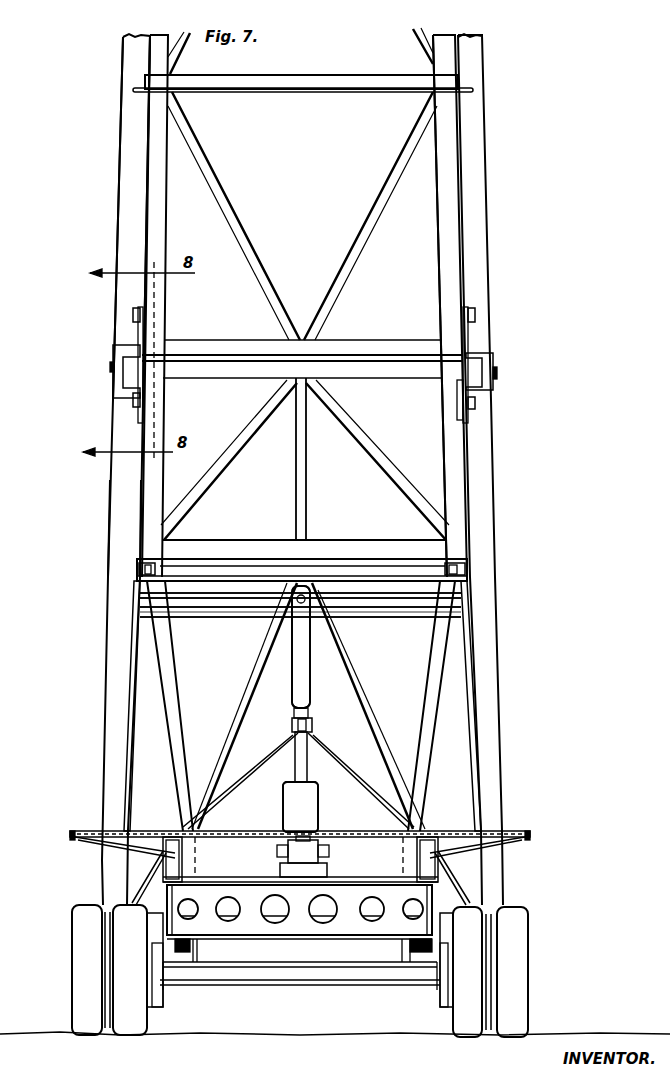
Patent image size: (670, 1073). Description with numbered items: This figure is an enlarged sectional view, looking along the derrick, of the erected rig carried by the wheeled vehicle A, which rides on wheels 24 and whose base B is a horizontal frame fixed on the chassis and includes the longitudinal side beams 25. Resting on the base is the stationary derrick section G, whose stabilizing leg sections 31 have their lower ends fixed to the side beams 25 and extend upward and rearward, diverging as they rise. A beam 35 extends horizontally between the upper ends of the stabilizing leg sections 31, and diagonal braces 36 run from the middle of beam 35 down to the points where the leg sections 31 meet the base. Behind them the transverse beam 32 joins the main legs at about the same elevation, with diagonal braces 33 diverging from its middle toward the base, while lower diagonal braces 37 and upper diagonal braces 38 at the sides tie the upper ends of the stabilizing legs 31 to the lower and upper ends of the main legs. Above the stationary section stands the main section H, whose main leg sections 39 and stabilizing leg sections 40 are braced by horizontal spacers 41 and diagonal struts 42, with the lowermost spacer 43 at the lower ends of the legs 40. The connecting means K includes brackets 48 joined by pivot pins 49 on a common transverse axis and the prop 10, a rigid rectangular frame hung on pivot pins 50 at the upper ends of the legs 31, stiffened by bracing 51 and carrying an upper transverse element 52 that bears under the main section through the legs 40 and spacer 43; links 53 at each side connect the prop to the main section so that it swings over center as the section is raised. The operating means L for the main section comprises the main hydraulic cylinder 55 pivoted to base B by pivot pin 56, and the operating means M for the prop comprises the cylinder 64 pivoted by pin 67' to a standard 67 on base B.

The prop 10 is at (452, 478).
The wheel 24 is at (515, 1002).
The longitudinal side beams 25 is at (198, 855).
The stabilizing leg sections 31 is at (165, 692).
The transverse tie or beam 32 is at (370, 618).
The diagonal braces 33 is at (398, 770).
The beam 35 is at (218, 587).
The diagonal braces 36 is at (260, 648).
The lower diagonal braces 37 is at (108, 742).
The upper diagonal braces 38 is at (122, 483).
The main leg sections 39 is at (122, 238).
The stabilizing leg sections 40 is at (163, 147).
The horizontal spacers 41 is at (303, 92).
The diagonal struts 42 is at (240, 235).
The lowermost horizontal spacer 43 is at (412, 332).
The brackets 48 is at (113, 396).
The pivot pins 49 is at (112, 377).
The pivot pins 50 is at (172, 560).
The bracing 51 is at (215, 470).
The upper transverse element 52 is at (358, 375).
The links 53 is at (122, 337).
The main hydraulic cylinder 55 is at (320, 805).
The pivot pin 56 is at (335, 850).
The cylinder 64 is at (293, 690).
The standard 67 is at (298, 781).
The pivot pin 67' is at (319, 724).
The wheeled carrier or vehicle A is at (68, 920).
The base B is at (470, 831).
The stationary section G is at (497, 712).
The main or middle section H is at (122, 172).
The connecting means K is at (112, 515).
The operating means L is at (300, 807).
The operating means M is at (312, 691).